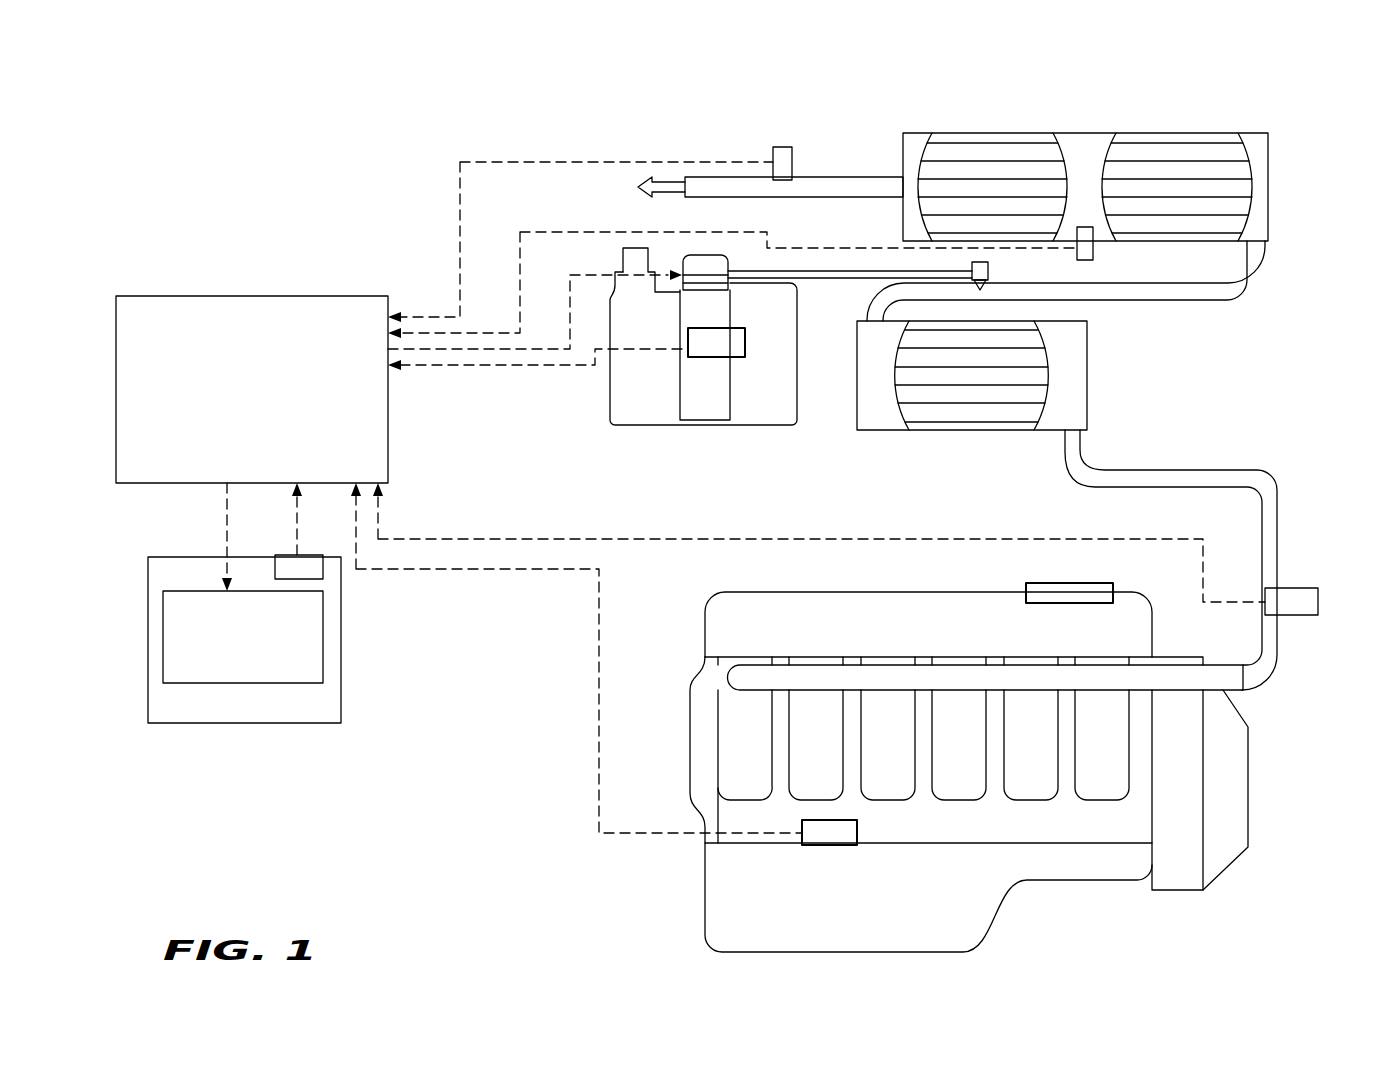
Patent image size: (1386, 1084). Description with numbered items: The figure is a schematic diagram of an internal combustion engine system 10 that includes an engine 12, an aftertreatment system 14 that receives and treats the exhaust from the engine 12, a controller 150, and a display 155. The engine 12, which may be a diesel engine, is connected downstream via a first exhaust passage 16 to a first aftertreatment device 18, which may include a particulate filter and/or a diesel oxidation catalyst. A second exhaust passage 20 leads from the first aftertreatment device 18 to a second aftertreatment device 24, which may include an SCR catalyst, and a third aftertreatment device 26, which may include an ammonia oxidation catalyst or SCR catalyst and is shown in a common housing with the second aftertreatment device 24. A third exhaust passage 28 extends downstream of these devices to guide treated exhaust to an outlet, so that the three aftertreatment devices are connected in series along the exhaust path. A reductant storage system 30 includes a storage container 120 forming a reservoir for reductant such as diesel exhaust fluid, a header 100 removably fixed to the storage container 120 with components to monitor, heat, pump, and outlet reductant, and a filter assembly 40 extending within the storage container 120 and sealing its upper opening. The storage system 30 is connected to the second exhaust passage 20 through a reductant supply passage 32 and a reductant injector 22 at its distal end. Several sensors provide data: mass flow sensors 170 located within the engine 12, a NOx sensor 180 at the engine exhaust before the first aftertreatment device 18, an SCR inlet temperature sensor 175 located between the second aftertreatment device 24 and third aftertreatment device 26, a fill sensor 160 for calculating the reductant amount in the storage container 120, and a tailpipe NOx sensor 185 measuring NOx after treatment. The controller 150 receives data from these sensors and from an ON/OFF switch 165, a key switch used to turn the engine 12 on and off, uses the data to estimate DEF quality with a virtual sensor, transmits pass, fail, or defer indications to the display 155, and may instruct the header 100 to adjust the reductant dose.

The header 100 is at (123, 97).
The internal combustion engine system 10 is at (607, 122).
The engine 12 is at (700, 767).
The aftertreatment system 14 is at (1280, 305).
The first exhaust passage 16 is at (1267, 532).
The first aftertreatment device 18 is at (1025, 343).
The second exhaust passage 20 is at (1180, 298).
The reductant injector 22 is at (990, 271).
The second aftertreatment device 24 is at (1143, 167).
The third aftertreatment device 26 is at (965, 165).
The third exhaust passage 28 is at (703, 188).
The reductant storage system 30 is at (610, 263).
The reductant supply passage 32 is at (847, 273).
The filter assembly 40 is at (676, 379).
The storage container 120 is at (620, 368).
The controller 150 is at (330, 402).
The display 155 is at (297, 648).
The fill sensor 160 is at (935, 460).
The ON/OFF switch 165 is at (317, 567).
The mass flow sensors 170 is at (1245, 953).
The SCR inlet temperature sensor 175 is at (1088, 227).
The NOx sensor 180 is at (1308, 615).
The tailpipe NOx sensor 185 is at (900, 98).